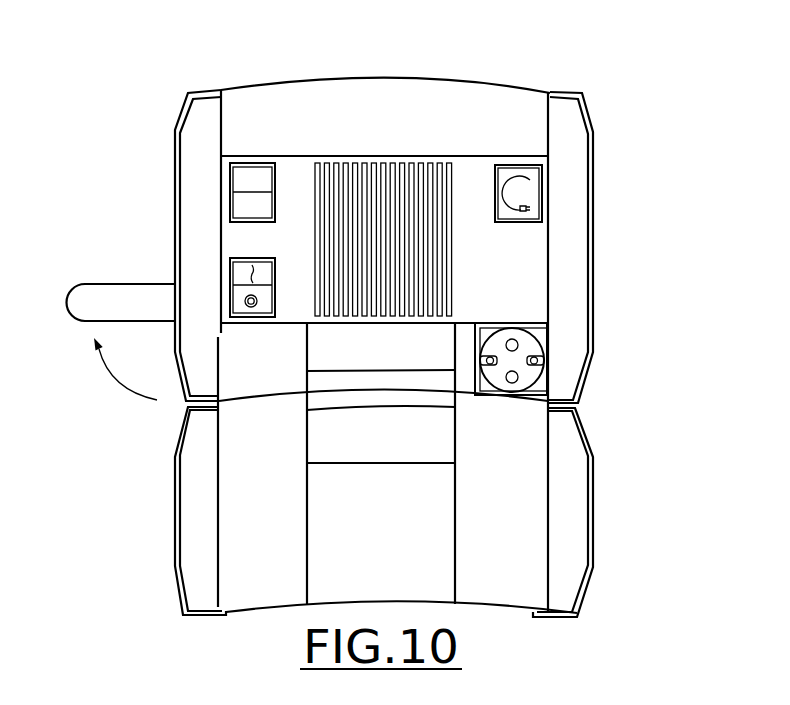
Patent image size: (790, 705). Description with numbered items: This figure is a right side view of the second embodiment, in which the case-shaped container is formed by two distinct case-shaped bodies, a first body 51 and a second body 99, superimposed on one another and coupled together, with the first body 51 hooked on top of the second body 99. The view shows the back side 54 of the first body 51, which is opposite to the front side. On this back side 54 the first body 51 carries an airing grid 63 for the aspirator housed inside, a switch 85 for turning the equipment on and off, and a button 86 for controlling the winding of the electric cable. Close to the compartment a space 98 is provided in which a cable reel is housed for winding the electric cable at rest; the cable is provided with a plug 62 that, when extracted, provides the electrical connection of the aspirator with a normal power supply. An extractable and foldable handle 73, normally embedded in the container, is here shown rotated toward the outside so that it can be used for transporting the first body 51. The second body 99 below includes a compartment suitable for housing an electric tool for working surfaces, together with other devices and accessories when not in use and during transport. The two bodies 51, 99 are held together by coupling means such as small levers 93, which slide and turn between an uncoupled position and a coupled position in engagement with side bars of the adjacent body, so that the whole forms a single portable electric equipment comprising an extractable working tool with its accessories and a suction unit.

The first case-shaped body 51 is at (470, 66).
The back side 54 is at (528, 104).
The airing grid 63 is at (362, 178).
The switch 85 is at (251, 262).
The handle 73 is at (120, 298).
The button 86 is at (523, 192).
The space 98 is at (538, 335).
The plug 62 is at (517, 365).
The small levers 93 is at (326, 436).
The second case-shaped body 99 is at (601, 530).